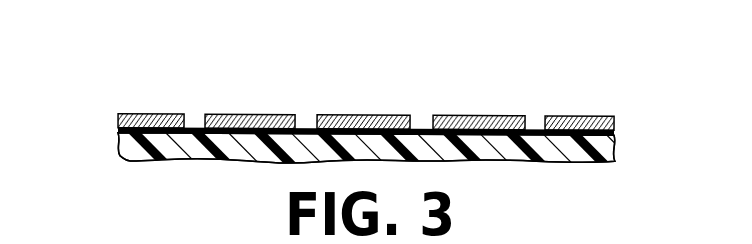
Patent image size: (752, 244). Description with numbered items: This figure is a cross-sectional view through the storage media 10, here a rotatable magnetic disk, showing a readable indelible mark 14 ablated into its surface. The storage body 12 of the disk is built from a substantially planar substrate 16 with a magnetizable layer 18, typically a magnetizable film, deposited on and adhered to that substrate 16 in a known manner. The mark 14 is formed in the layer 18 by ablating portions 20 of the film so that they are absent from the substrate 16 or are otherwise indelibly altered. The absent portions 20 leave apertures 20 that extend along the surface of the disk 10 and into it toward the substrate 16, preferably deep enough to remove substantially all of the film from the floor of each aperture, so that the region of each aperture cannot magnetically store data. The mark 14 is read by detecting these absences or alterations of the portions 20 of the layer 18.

The storage media 10 is at (107, 162).
The storage body 12 is at (78, 164).
The readable indelible mark 14 is at (140, 80).
The substrate 16 is at (607, 148).
The magnetizable layer 18 is at (614, 117).
The apertures 20 is at (194, 117).